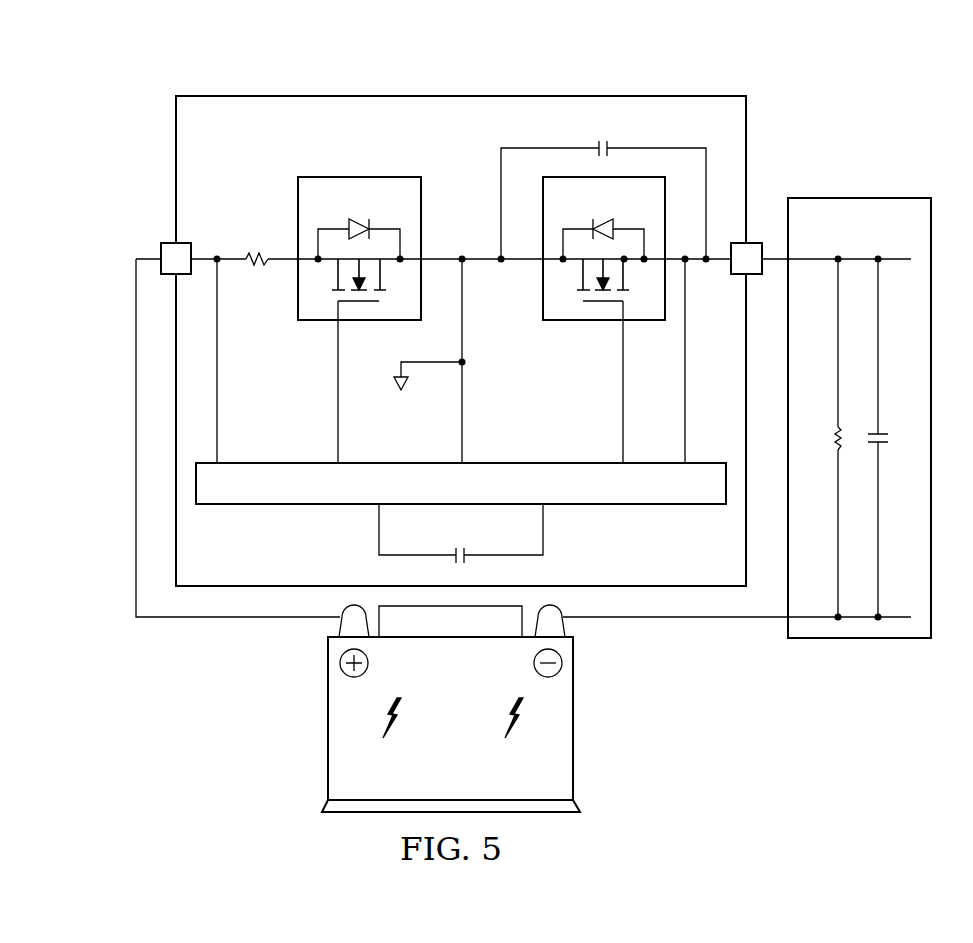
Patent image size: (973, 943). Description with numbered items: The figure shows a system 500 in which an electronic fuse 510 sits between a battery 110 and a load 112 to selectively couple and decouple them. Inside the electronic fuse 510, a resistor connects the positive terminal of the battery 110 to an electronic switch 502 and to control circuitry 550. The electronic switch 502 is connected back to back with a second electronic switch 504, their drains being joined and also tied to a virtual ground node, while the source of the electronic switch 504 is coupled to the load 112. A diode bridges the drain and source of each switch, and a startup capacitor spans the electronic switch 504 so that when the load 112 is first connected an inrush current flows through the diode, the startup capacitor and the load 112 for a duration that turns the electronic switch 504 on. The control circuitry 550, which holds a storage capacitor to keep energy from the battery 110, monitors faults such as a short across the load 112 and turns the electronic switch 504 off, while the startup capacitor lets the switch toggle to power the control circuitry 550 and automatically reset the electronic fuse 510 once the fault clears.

The system 500 is at (124, 74).
The electronic fuse 510 is at (291, 95).
The electronic switch 502 is at (346, 172).
The electronic switch 504 is at (593, 326).
The control circuitry 550 is at (287, 505).
The battery 110 is at (327, 716).
The load 112 is at (871, 194).